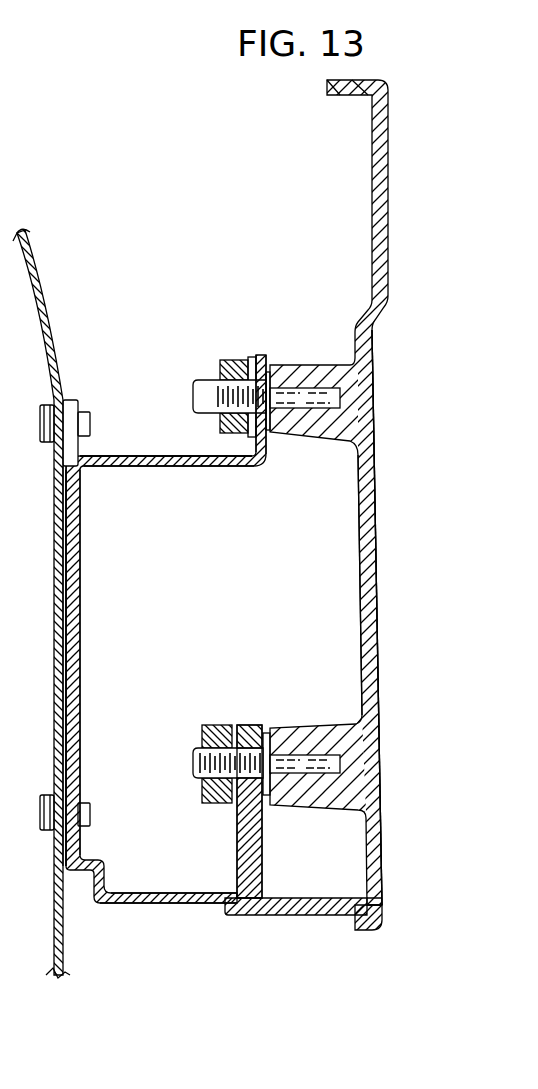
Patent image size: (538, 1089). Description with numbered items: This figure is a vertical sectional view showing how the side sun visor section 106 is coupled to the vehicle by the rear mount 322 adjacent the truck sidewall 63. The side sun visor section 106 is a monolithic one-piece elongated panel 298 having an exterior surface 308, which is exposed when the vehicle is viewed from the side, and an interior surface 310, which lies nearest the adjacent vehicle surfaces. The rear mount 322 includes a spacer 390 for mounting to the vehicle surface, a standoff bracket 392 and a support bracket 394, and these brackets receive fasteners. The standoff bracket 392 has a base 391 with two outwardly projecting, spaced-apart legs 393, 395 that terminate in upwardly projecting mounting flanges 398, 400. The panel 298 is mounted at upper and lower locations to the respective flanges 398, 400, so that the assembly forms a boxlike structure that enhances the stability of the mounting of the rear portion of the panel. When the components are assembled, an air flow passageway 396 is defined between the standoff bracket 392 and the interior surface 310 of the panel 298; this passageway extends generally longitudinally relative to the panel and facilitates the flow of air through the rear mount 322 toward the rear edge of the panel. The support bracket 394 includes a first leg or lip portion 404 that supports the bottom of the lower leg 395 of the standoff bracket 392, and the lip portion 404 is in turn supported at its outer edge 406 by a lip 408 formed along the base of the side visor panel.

The sidewall 63 is at (55, 925).
The side sun visor section 106 is at (379, 493).
The elongated panel 298 is at (368, 465).
The exterior surface 308 is at (378, 598).
The interior surface 310 is at (358, 578).
The rear mount 322 is at (187, 368).
The spacer 390 is at (80, 535).
The base 391 is at (80, 660).
The standoff bracket 392 is at (145, 470).
The leg 393 is at (113, 456).
The support bracket 394 is at (290, 918).
The leg 395 is at (162, 893).
The air flow passageway 396 is at (214, 610).
The mounting flange 398 is at (268, 450).
The mounting flange 400 is at (245, 728).
The lip portion 404 is at (225, 918).
The outer edge 406 is at (385, 903).
The lip 408 is at (362, 932).